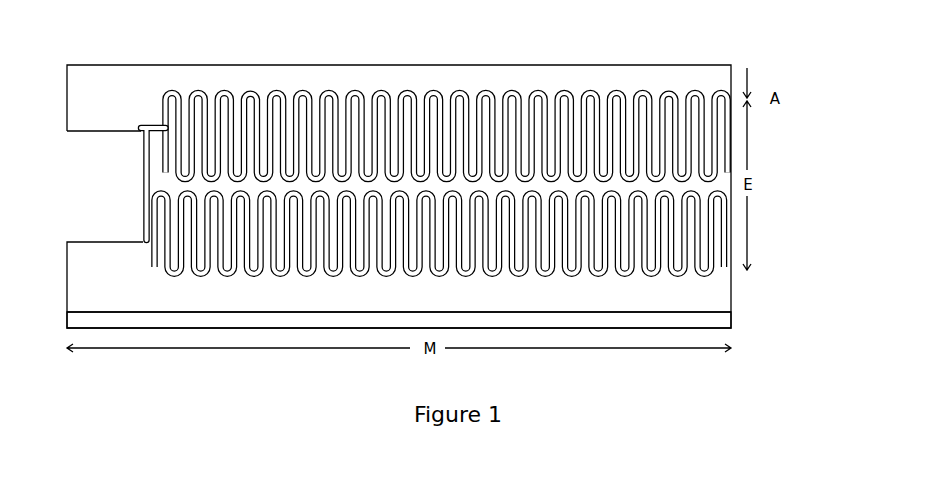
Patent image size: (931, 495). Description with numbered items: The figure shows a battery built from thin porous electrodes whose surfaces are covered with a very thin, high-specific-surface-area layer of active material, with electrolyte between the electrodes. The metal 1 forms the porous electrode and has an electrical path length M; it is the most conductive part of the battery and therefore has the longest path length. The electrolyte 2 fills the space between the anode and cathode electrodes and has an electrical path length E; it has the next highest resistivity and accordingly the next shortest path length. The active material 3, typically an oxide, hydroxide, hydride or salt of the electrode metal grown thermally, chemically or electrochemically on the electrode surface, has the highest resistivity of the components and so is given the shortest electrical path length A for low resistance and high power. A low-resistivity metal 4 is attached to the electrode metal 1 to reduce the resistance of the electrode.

The metal 1 is at (425, 78).
The electrolyte 2 is at (463, 102).
The active material 3 is at (490, 107).
The low-resistivity metal 4 is at (724, 320).